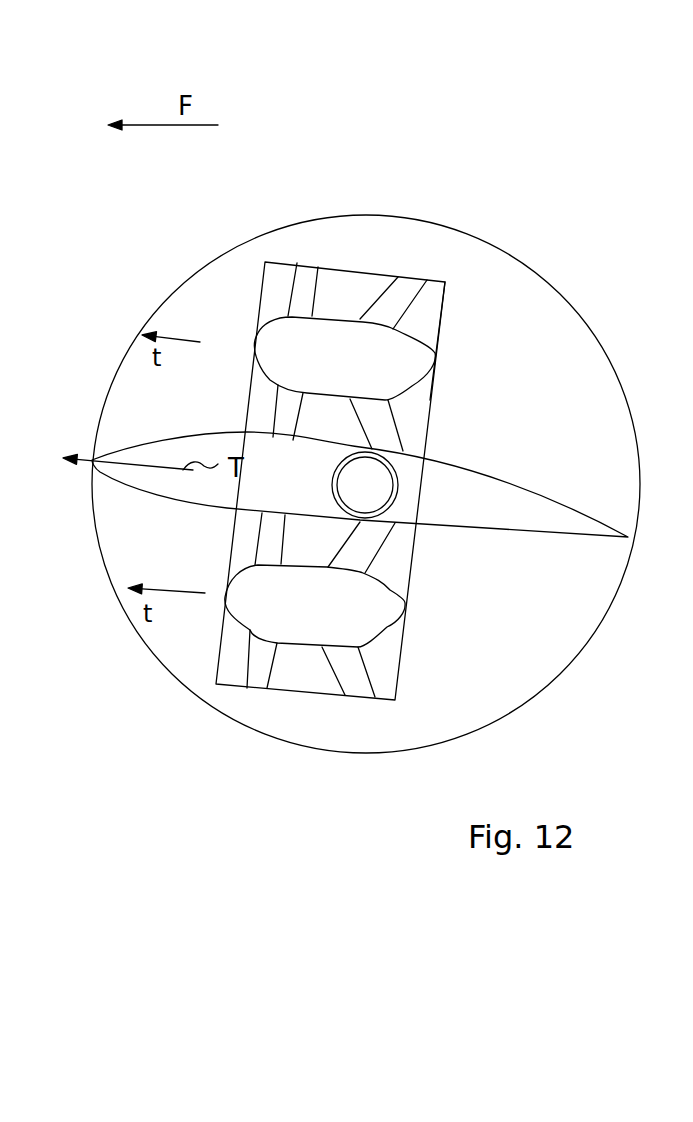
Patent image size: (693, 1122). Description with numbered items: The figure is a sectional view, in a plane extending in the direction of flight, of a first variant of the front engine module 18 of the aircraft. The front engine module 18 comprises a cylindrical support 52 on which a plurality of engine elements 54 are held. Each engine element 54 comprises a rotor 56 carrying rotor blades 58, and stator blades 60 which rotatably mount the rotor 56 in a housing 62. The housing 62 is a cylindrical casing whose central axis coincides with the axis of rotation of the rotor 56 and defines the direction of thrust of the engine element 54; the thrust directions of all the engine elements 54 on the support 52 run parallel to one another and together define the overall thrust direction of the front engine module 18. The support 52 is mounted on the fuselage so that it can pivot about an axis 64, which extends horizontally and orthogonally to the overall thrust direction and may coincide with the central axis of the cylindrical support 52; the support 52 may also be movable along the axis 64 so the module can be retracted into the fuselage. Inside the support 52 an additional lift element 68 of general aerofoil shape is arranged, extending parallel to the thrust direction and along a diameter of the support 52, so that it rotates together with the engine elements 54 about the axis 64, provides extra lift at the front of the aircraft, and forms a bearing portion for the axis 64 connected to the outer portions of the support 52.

The front engine module 18 is at (212, 232).
The support 52 is at (568, 307).
The engine element 54 is at (278, 262).
The rotor 56 is at (268, 345).
The rotor blades 58 is at (312, 278).
The stator blades 60 is at (406, 278).
The housing 62 is at (443, 284).
The axis 64 is at (380, 493).
The lift element 68 is at (505, 497).